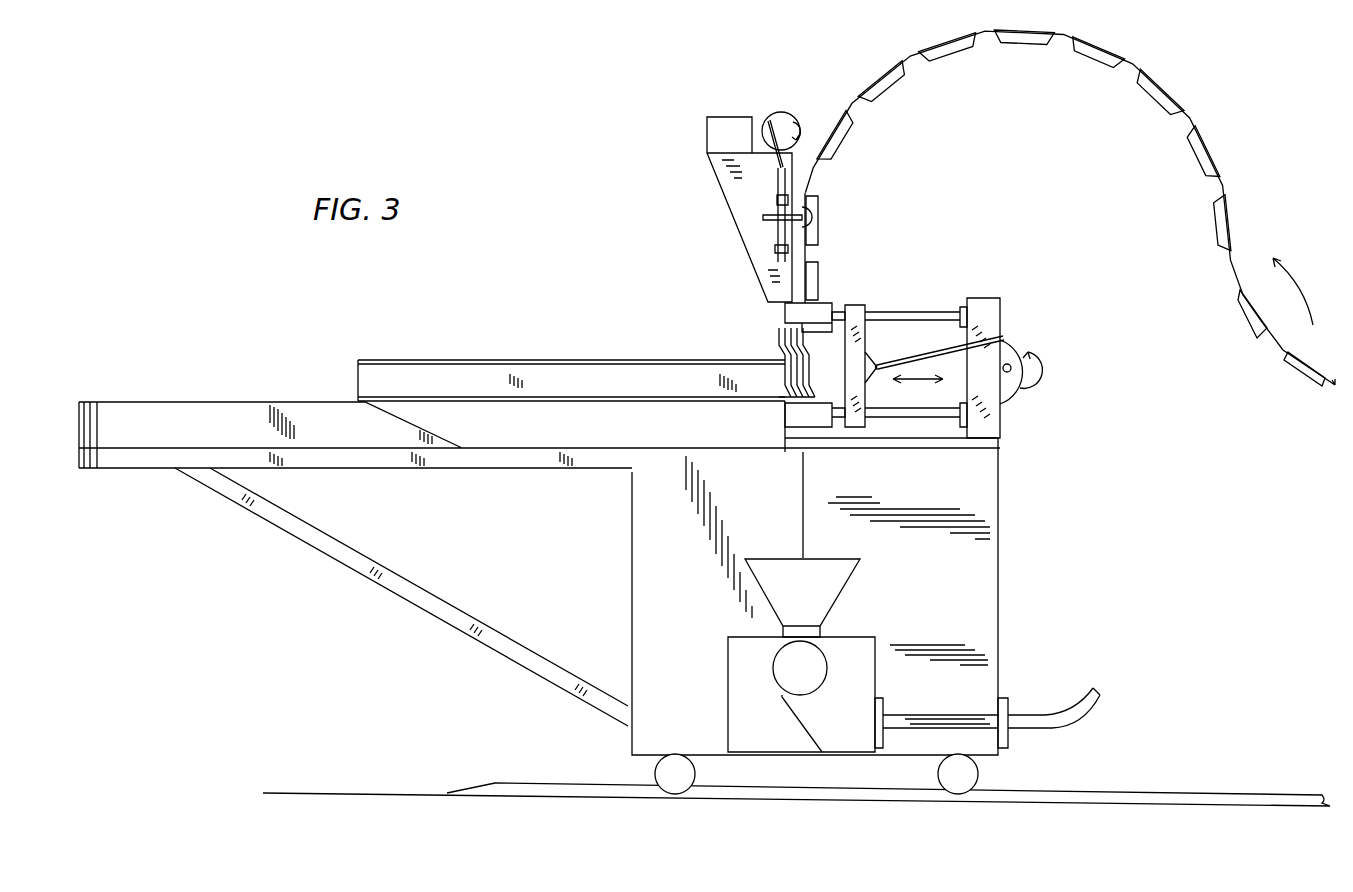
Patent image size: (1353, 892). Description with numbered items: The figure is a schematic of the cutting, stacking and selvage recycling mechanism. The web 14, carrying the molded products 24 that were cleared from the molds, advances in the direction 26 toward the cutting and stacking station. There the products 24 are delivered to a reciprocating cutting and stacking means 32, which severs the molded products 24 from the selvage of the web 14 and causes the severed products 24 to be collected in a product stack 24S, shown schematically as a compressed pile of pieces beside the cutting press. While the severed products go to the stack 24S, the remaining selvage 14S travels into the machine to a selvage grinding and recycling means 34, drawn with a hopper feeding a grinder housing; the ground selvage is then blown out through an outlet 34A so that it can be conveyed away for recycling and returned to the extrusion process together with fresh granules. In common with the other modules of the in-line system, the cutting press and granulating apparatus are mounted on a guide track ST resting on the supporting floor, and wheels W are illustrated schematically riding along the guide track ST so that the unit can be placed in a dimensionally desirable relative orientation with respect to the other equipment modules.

The web 14 is at (1164, 90).
The molded products 24 is at (875, 125).
The product stack 24S is at (773, 317).
The direction of travel 26 is at (1290, 297).
The reciprocating cutting and stacking means 32 is at (917, 265).
The selvage grinding and recycling means 34 is at (871, 629).
The discharge hose 34A is at (1043, 717).
The selvage 14S is at (803, 498).
The wheels W is at (695, 774).
The guide track ST is at (1120, 792).